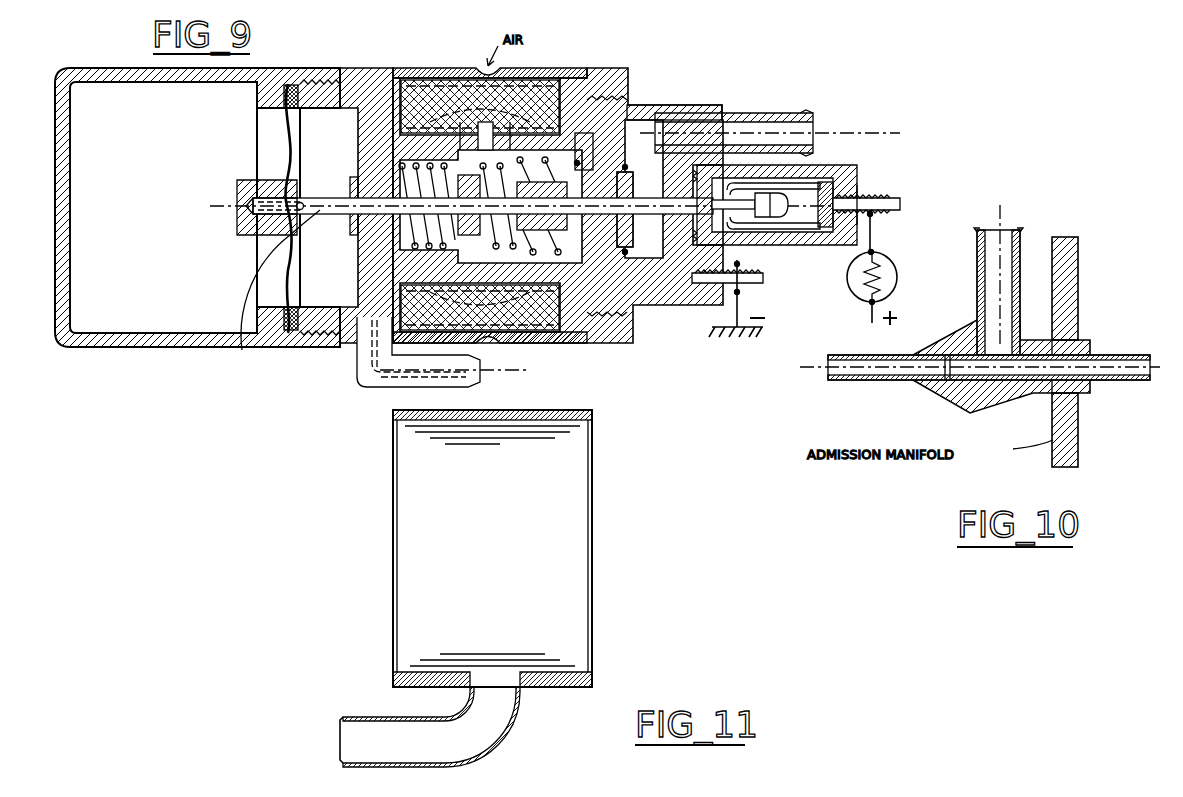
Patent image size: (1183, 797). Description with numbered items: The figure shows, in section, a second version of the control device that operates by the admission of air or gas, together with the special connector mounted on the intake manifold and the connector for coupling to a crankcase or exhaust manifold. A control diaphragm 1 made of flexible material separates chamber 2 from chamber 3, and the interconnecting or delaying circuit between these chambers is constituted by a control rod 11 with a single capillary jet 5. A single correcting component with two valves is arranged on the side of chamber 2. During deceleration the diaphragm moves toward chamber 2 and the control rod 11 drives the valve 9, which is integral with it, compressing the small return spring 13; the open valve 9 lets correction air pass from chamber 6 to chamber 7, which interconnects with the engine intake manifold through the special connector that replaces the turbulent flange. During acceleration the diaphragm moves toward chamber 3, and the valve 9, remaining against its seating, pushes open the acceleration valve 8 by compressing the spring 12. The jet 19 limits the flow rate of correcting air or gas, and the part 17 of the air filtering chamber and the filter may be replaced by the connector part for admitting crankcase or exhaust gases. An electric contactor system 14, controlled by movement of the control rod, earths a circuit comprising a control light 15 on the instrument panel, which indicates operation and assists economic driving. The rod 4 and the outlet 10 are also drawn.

The control diaphragm 1 is at (291, 143).
The chamber 2 is at (329, 207).
The chamber 3 is at (197, 207).
The valve rod 4 is at (301, 203).
The capillary jet 5 is at (236, 204).
The chamber 6 is at (491, 206).
The chamber 7 is at (629, 191).
The acceleration valve 8 is at (592, 132).
The valve 9 is at (627, 165).
The outlet pipe 10 is at (357, 374).
The control rod 11 is at (277, 293).
The spring 12 is at (508, 160).
The small return spring 13 is at (564, 160).
The electric contactor system 14 is at (838, 166).
The control light 15 is at (898, 277).
The part of the air filtering chamber 17 is at (580, 345).
The jet 19 is at (468, 124).